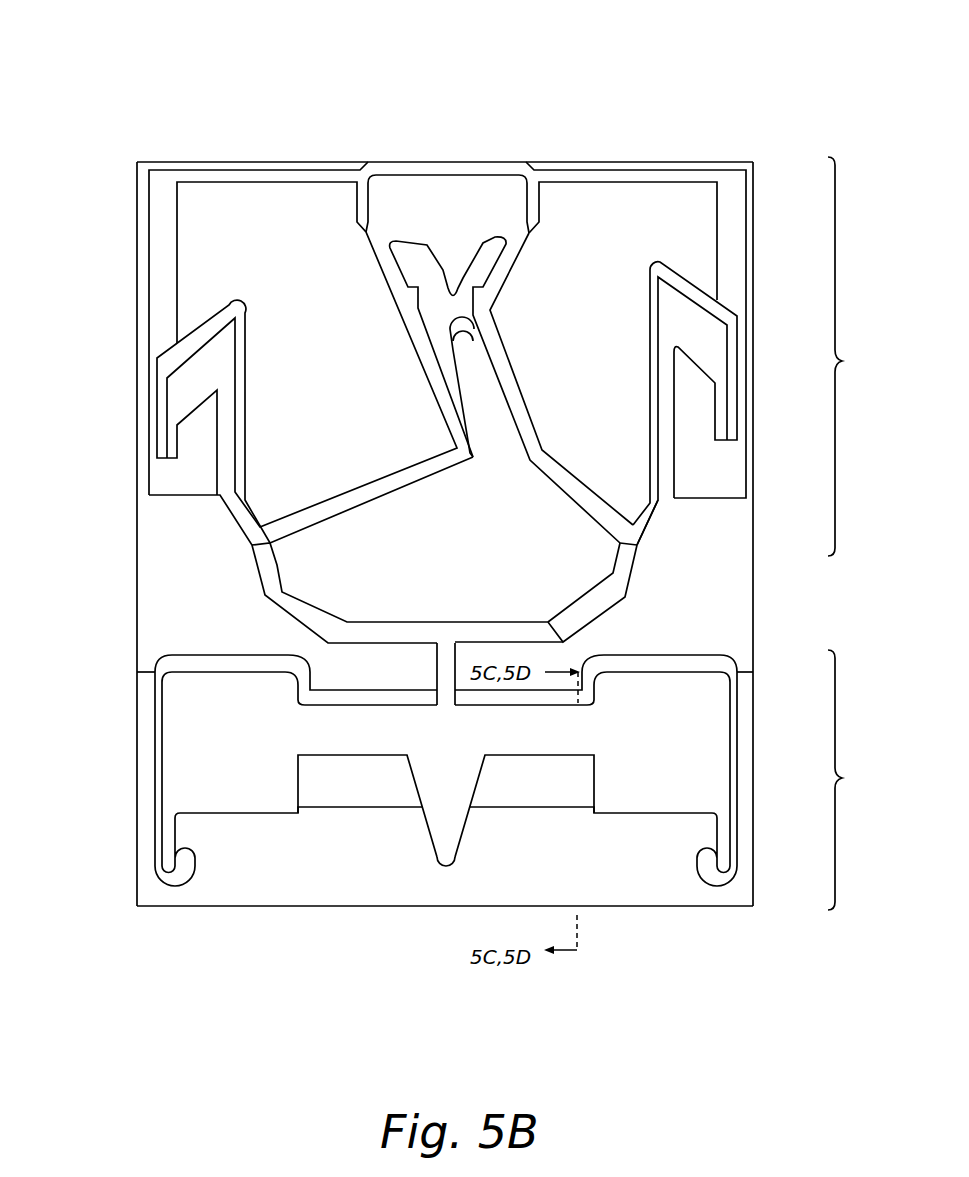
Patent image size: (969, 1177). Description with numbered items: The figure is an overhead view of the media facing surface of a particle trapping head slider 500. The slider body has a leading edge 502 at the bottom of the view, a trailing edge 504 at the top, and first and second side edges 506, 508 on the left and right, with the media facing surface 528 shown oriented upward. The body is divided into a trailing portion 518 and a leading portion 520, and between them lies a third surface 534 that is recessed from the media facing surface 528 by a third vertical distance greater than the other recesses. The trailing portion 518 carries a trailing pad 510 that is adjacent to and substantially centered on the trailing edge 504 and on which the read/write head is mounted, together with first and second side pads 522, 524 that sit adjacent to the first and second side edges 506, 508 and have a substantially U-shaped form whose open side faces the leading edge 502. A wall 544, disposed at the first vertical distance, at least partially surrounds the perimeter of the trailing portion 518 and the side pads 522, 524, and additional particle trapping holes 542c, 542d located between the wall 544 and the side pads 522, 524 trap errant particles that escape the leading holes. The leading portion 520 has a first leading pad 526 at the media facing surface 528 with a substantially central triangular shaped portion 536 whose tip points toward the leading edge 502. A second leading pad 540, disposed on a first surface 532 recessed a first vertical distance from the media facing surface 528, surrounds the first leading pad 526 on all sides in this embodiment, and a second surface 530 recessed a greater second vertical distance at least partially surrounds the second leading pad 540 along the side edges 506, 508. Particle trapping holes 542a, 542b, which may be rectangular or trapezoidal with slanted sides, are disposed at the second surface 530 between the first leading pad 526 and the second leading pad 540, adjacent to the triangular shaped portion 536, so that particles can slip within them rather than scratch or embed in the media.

The particle trapping head slider 500 is at (148, 40).
The leading edge 502 is at (410, 954).
The trailing edge 504 is at (443, 84).
The first side edge 506 is at (98, 607).
The second side edge 508 is at (794, 607).
The trailing pad 510 is at (490, 190).
The trailing portion 518 is at (859, 356).
The leading portion 520 is at (859, 780).
The first side pad 522 is at (220, 348).
The second side pad 524 is at (675, 313).
The first leading pad 526 is at (228, 690).
The media facing surface 528 is at (408, 190).
The second surface 530 is at (275, 213).
The first surface 532 is at (160, 192).
The third surface 534 is at (449, 566).
The triangular shaped portion 536 is at (448, 867).
The second leading pad 540 is at (227, 875).
The particle trapping hole 542a is at (358, 787).
The particle trapping hole 542b is at (534, 787).
The additional particle trapping hole 542c is at (720, 307).
The additional particle trapping hole 542d is at (173, 346).
The wall 544 is at (730, 190).